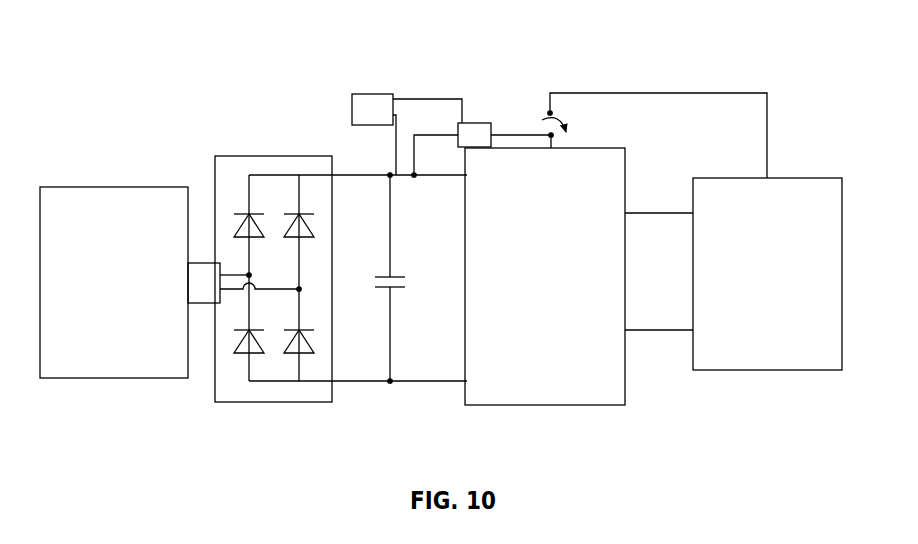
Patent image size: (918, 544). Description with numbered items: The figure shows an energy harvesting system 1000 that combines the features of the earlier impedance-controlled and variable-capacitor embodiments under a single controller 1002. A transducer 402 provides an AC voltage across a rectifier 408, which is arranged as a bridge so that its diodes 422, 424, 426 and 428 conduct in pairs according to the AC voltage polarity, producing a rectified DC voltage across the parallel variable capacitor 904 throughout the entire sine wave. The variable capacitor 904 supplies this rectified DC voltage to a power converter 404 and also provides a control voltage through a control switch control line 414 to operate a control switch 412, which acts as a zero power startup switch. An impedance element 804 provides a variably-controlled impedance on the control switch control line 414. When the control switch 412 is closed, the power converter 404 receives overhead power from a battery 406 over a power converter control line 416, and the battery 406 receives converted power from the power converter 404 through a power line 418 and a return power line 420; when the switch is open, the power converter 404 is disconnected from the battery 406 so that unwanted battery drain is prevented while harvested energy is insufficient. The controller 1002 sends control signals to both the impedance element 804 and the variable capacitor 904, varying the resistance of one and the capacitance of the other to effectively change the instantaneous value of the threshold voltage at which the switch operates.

The energy harvesting system 1000 is at (165, 56).
The transducer 402 is at (100, 187).
The rectifier 408 is at (321, 279).
The diode 422 is at (236, 230).
The diode 426 is at (315, 229).
The diode 428 is at (240, 340).
The diode 424 is at (313, 345).
The variable capacitor 904 is at (397, 290).
The controller 1002 is at (373, 94).
The control switch control line 414 is at (436, 134).
The impedance element 804 is at (470, 123).
The control switch 412 is at (543, 105).
The power converter control line 416 is at (667, 93).
The power converter 404 is at (594, 148).
The power line 418 is at (650, 213).
The return power line 420 is at (652, 331).
The battery 406 is at (783, 178).